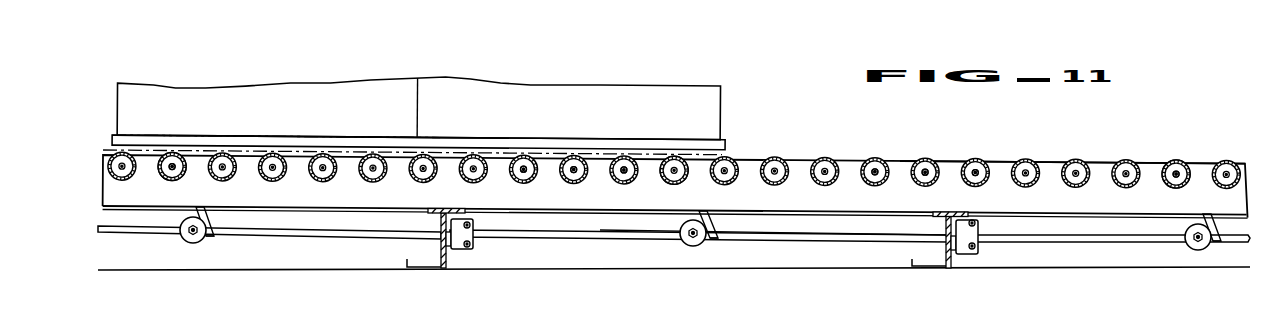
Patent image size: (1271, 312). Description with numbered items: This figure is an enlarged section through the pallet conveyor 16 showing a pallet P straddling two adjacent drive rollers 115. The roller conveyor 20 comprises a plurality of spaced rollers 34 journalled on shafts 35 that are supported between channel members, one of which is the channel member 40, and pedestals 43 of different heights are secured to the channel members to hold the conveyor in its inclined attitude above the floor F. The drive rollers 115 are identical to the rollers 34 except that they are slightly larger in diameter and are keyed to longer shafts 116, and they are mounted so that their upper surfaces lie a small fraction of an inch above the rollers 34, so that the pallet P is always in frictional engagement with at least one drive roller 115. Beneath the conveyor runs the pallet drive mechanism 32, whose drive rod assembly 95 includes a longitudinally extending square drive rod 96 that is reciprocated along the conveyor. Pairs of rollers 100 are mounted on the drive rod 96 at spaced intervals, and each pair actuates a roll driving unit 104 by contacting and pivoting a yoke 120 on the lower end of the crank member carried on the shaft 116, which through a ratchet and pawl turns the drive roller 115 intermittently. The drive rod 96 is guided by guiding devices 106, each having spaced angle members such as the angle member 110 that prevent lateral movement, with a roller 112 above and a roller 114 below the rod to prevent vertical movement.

The pallet P is at (477, 136).
The floor F is at (682, 266).
The pallet conveyor 16 is at (960, 151).
The roller conveyor 20 is at (750, 156).
The pallet drive mechanism 32 is at (326, 236).
The rollers 34 is at (412, 179).
The shafts 35 is at (623, 168).
The channel member 40 is at (660, 204).
The pedestals 43 is at (438, 258).
The drive rod assembly 95 is at (851, 238).
The drive rod 96 is at (600, 234).
The rollers 100 is at (185, 239).
The roll driving unit 104 is at (222, 214).
The guiding device 106 is at (473, 224).
The angle member 110 is at (461, 247).
The roller 112 is at (467, 222).
The roller 114 is at (474, 242).
The drive roller 115 is at (183, 176).
The shafts 116 is at (172, 167).
The yoke 120 is at (211, 237).